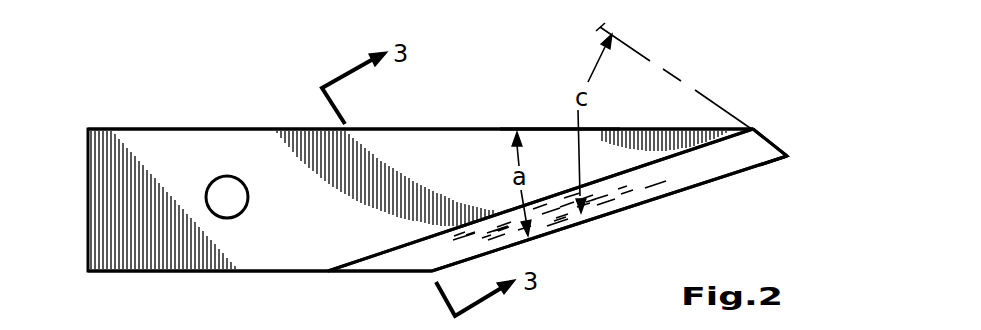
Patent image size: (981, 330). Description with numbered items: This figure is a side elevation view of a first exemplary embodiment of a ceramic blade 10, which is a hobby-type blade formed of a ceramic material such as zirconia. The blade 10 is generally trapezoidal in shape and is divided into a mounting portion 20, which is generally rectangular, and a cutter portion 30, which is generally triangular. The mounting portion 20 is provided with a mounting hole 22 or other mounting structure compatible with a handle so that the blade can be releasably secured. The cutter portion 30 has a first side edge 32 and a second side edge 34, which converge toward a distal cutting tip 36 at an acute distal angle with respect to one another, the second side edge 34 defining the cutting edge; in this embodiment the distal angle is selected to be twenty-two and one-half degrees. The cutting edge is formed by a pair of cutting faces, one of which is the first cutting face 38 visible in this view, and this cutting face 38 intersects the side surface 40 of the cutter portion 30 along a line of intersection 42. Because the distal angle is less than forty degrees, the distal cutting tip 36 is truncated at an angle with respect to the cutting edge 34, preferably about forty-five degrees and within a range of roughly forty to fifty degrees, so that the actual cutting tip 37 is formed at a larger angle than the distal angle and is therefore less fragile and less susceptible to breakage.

The blade 10 is at (280, 109).
The mounting portion 20 is at (275, 260).
The mounting hole 22 is at (222, 175).
The cutter portion 30 is at (456, 152).
The first side edge 32 is at (551, 128).
The second side edge 34 is at (680, 191).
The distal cutting tip 36 is at (772, 140).
The actual cutting tip 37 is at (789, 158).
The first cutting face 38 is at (635, 190).
The side surface 40 is at (476, 189).
The line of intersection 42 is at (690, 153).